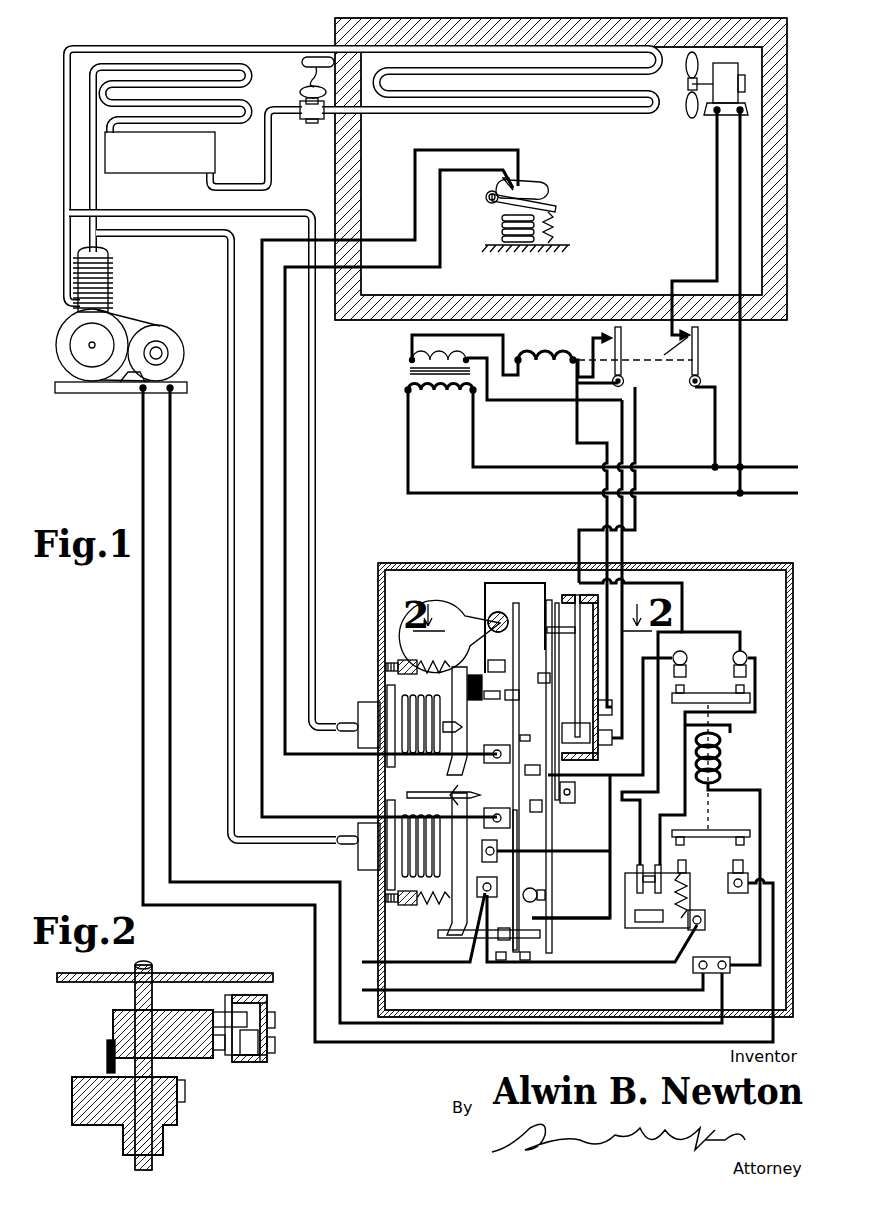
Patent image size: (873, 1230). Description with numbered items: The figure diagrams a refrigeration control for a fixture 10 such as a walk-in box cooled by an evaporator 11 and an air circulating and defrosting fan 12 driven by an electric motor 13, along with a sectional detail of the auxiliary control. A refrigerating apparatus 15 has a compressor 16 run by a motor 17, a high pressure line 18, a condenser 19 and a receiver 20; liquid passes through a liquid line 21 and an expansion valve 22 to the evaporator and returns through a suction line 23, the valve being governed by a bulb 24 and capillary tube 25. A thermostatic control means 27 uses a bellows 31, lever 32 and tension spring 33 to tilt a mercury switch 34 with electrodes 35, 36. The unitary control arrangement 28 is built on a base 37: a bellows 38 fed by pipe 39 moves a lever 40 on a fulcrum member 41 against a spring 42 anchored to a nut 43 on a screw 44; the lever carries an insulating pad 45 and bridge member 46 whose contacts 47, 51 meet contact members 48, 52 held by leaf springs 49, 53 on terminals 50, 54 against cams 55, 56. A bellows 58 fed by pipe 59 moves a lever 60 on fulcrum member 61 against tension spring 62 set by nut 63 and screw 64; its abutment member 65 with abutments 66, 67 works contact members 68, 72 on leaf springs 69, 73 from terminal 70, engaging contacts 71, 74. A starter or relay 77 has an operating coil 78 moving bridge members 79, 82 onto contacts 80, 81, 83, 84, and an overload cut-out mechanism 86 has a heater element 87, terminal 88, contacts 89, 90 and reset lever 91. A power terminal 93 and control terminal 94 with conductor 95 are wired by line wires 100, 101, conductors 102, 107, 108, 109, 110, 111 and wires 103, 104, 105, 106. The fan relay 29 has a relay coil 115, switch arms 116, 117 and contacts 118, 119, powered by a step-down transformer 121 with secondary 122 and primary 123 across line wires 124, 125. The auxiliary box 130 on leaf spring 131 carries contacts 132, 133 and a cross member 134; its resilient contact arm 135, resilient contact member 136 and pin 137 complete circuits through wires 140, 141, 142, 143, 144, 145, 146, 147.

In FIG. 1, the fixture 10 is at (590, 292).
In FIG. 1, the evaporator 11 is at (592, 112).
In FIG. 1, the air circulating and defrosting fan 12 is at (690, 118).
In FIG. 1, the electric motor 13 is at (733, 63).
In FIG. 1, the refrigerating apparatus 15 is at (130, 331).
In FIG. 1, the compressor 16 is at (100, 252).
In FIG. 1, the motor 17 is at (162, 330).
In FIG. 1, the high pressure line 18 is at (97, 193).
In FIG. 1, the condenser 19 is at (236, 125).
In FIG. 1, the receiver 20 is at (168, 164).
In FIG. 1, the liquid line 21 is at (272, 160).
In FIG. 1, the expansion valve 22 is at (310, 116).
In FIG. 1, the low pressure or suction line 23 is at (76, 47).
In FIG. 1, the bulb 24 is at (320, 56).
In FIG. 1, the capillary tube 25 is at (300, 78).
In FIG. 1, the thermostatic control means 27 is at (532, 201).
In FIG. 1, the unitary control arrangement 28 is at (364, 612).
In FIG. 1, the relay 29 is at (760, 370).
In FIG. 1, the bellows 31 is at (500, 229).
In FIG. 1, the lever 32 is at (556, 208).
In FIG. 1, the tension spring 33 is at (554, 230).
In FIG. 1, the mercury switch 34 is at (538, 182).
In FIG. 1, the electrode 35 is at (512, 180).
In FIG. 1, the electrode 36 is at (498, 187).
In FIG. 1, the base 37 is at (378, 578).
In FIG. 2, the base 37 is at (204, 973).
In FIG. 1, the bellows 38 is at (400, 694).
In FIG. 1, the pipe 39 is at (313, 684).
In FIG. 1, the lever 40 is at (456, 698).
In FIG. 1, the fulcrum member 41 is at (371, 786).
In FIG. 1, the spring 42 is at (444, 658).
In FIG. 1, the nut 43 is at (408, 660).
In FIG. 1, the screw 44 is at (378, 668).
In FIG. 1, the insulating pad 45 is at (462, 668).
In FIG. 2, the insulating pad 45 is at (107, 1048).
In FIG. 1, the bridge member 46 is at (478, 700).
In FIG. 1, the contact 47 is at (492, 700).
In FIG. 1, the contact member 48 is at (518, 700).
In FIG. 2, the contact member 48 is at (185, 1090).
In FIG. 1, the leaf spring 49 is at (532, 736).
In FIG. 1, the terminal 50 is at (496, 763).
In FIG. 1, the contact 51 is at (500, 662).
In FIG. 1, the contact member 52 is at (546, 684).
In FIG. 2, the contact member 52 is at (220, 1052).
In FIG. 1, the leaf spring 53 is at (536, 770).
In FIG. 1, the terminal 54 is at (574, 803).
In FIG. 1, the cam 55 is at (490, 620).
In FIG. 2, the cam 55 is at (72, 1120).
In FIG. 1, the cam 56 is at (516, 608).
In FIG. 2, the cam 56 is at (113, 1014).
In FIG. 1, the bellows 58 is at (404, 876).
In FIG. 1, the pipe 59 is at (280, 840).
In FIG. 1, the lever 60 is at (456, 878).
In FIG. 1, the fulcrum member 61 is at (443, 790).
In FIG. 1, the tension spring 62 is at (434, 904).
In FIG. 1, the nut 63 is at (406, 905).
In FIG. 1, the screw 64 is at (378, 898).
In FIG. 1, the adjustable abutment member 65 is at (452, 938).
In FIG. 1, the abutment 66 is at (507, 967).
In FIG. 1, the abutment 67 is at (528, 967).
In FIG. 1, the contact member 68 is at (504, 923).
In FIG. 1, the leaf spring 69 is at (517, 832).
In FIG. 1, the terminal 70 is at (497, 814).
In FIG. 1, the contact 71 is at (490, 876).
In FIG. 1, the contact member 72 is at (553, 938).
In FIG. 1, the leaf spring 73 is at (536, 809).
In FIG. 1, the contact 74 is at (530, 888).
In FIG. 1, the starter or relay 77 is at (752, 618).
In FIG. 1, the operating coil 78 is at (720, 760).
In FIG. 1, the bridge member 79 is at (696, 694).
In FIG. 1, the contact 80 is at (688, 654).
In FIG. 1, the contact 81 is at (732, 656).
In FIG. 1, the bridge member 82 is at (716, 830).
In FIG. 1, the contact 83 is at (691, 858).
In FIG. 1, the contact 84 is at (732, 872).
In FIG. 1, the overload cut-out mechanism 86 is at (618, 942).
In FIG. 1, the heater element 87 is at (688, 886).
In FIG. 1, the terminal 88 is at (705, 920).
In FIG. 1, the contact 89 is at (638, 866).
In FIG. 1, the contact 90 is at (660, 870).
In FIG. 1, the reset lever 91 is at (652, 922).
In FIG. 1, the power terminal 93 is at (706, 957).
In FIG. 1, the control terminal 94 is at (488, 846).
In FIG. 1, the conductor 95 is at (596, 854).
In FIG. 1, the line wire 100 is at (372, 954).
In FIG. 1, the line wire 101 is at (372, 990).
In FIG. 1, the conductor 102 is at (520, 962).
In FIG. 1, the wire 103 is at (142, 438).
In FIG. 1, the wire 104 is at (170, 438).
In FIG. 1, the wire 105 is at (258, 786).
In FIG. 1, the wire 106 is at (290, 752).
In FIG. 1, the conductor 107 is at (572, 918).
In FIG. 1, the conductor 108 is at (756, 704).
In FIG. 1, the conductor 109 is at (738, 726).
In FIG. 1, the conductor 110 is at (740, 782).
In FIG. 1, the conductor 111 is at (682, 596).
In FIG. 1, the relay coil 115 is at (542, 346).
In FIG. 1, the switch arm 116 is at (621, 350).
In FIG. 1, the switch arm 117 is at (698, 350).
In FIG. 1, the contact 118 is at (600, 333).
In FIG. 1, the contact 119 is at (671, 348).
In FIG. 1, the step-down transformer 121 is at (406, 381).
In FIG. 1, the secondary 122 is at (424, 354).
In FIG. 1, the primary 123 is at (430, 406).
In FIG. 1, the line wire 124 is at (762, 466).
In FIG. 1, the line wire 125 is at (762, 494).
In FIG. 1, the box 130 is at (605, 762).
In FIG. 2, the box 130 is at (267, 996).
In FIG. 1, the leaf spring 131 is at (575, 842).
In FIG. 1, the contact 132 is at (612, 740).
In FIG. 2, the contact 132 is at (275, 1046).
In FIG. 1, the contact 133 is at (612, 710).
In FIG. 2, the contact 133 is at (275, 1018).
In FIG. 1, the cross member 134 is at (560, 633).
In FIG. 2, the cross member 134 is at (232, 1030).
In FIG. 1, the resilient contact arm 135 is at (580, 640).
In FIG. 2, the resilient contact arm 135 is at (230, 1000).
In FIG. 1, the resilient contact member 136 is at (585, 740).
In FIG. 2, the resilient contact member 136 is at (250, 1056).
In FIG. 1, the pin 137 is at (546, 600).
In FIG. 2, the pin 137 is at (210, 1016).
In FIG. 1, the wire 140 is at (508, 404).
In FIG. 1, the wire 141 is at (576, 442).
In FIG. 1, the wire 142 is at (408, 338).
In FIG. 1, the wire 143 is at (714, 428).
In FIG. 1, the wire 144 is at (712, 266).
In FIG. 1, the wire 145 is at (742, 333).
In FIG. 1, the wire 146 is at (578, 540).
In FIG. 1, the wire 147 is at (580, 382).